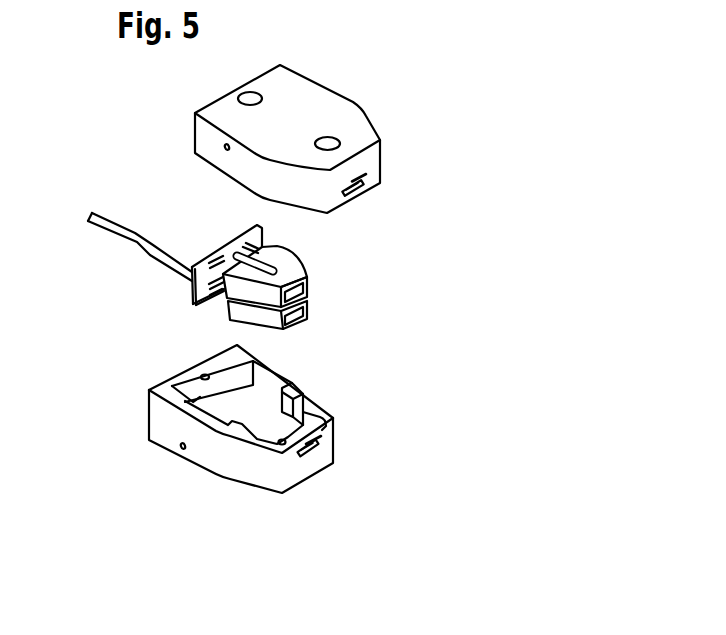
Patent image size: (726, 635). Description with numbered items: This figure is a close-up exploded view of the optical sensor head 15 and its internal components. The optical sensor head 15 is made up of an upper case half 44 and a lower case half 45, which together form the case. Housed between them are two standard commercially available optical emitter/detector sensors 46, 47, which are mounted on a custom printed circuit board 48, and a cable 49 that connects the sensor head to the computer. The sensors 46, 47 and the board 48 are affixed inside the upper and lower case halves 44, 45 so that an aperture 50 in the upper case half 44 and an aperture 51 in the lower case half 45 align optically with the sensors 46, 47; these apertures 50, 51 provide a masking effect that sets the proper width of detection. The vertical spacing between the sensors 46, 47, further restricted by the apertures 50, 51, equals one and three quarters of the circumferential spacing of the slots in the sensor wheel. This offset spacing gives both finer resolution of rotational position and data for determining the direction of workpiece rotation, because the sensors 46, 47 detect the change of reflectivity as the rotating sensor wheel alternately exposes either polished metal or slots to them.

The optical sensor head 15 is at (303, 140).
The upper case half 44 is at (303, 151).
The lower case half 45 is at (250, 428).
The optical emitter/detector sensor 46 is at (296, 275).
The optical emitter/detector sensor 47 is at (302, 334).
The printed circuit board 48 is at (167, 293).
The cable 49 is at (110, 247).
The aperture 50 is at (417, 205).
The aperture 51 is at (366, 474).